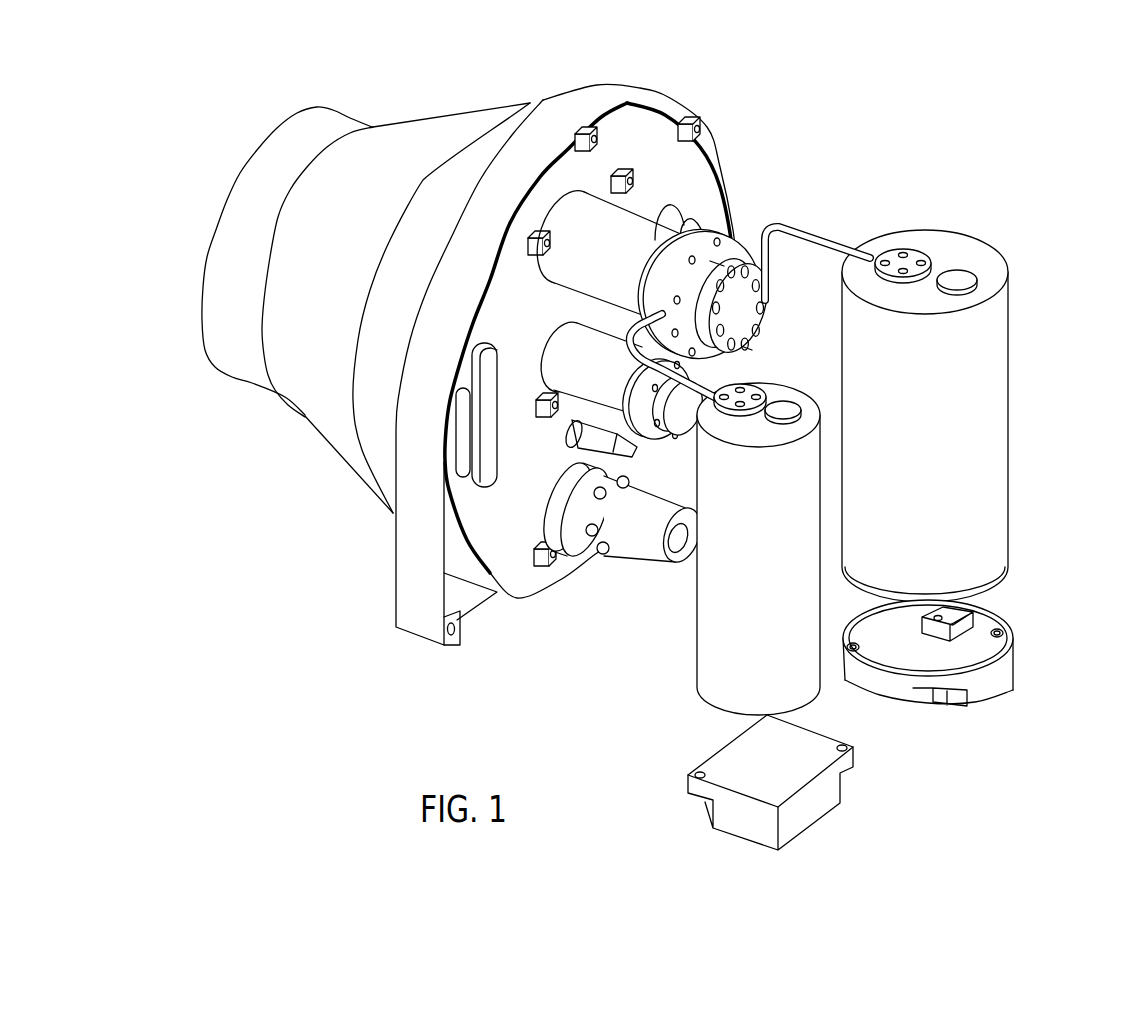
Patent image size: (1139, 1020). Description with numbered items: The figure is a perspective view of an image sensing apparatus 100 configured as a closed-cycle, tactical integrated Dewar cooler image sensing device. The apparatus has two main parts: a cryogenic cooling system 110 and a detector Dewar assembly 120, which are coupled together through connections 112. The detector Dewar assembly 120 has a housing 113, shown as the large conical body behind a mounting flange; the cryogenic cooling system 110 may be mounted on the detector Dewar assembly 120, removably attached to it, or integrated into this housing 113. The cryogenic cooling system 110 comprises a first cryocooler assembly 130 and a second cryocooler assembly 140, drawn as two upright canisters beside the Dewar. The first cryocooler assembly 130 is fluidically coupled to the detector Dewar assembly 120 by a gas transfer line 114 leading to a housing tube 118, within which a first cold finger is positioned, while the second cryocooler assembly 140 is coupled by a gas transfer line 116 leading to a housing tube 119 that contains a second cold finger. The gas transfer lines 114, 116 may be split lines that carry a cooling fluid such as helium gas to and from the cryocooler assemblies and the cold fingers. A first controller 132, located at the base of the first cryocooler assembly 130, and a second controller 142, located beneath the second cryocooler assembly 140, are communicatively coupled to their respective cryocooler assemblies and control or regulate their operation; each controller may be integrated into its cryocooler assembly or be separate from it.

The image sensing apparatus 100 is at (1040, 110).
The cryogenic cooling system 110 is at (1052, 264).
The connections 112 is at (848, 201).
The housing 113 is at (313, 417).
The gas transfer line 114 is at (821, 238).
The gas transfer line 116 is at (630, 347).
The housing tube 118 is at (613, 389).
The housing tube 119 is at (626, 279).
The detector Dewar assembly 120 is at (712, 96).
The first cryocooler assembly 130 is at (989, 576).
The first controller 132 is at (1010, 688).
The second cryocooler assembly 140 is at (716, 582).
The second controller 142 is at (820, 803).